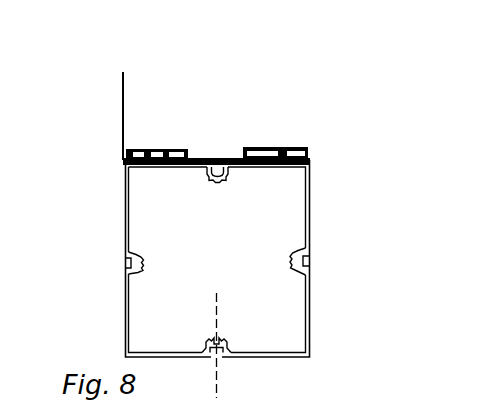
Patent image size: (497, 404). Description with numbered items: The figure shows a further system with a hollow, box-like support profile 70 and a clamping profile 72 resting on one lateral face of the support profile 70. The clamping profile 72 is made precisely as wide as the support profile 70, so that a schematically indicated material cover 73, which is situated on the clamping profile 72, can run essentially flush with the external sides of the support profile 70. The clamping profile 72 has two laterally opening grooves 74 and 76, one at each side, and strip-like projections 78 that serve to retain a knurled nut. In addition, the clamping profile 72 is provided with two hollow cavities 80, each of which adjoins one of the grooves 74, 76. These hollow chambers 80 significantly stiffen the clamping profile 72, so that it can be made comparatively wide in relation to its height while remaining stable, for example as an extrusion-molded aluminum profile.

The support profile 70 is at (308, 212).
The clamping profile 72 is at (278, 143).
The material cover 73 is at (125, 89).
The groove 74 is at (309, 149).
The groove 76 is at (122, 159).
The strip-like projections 78 is at (197, 157).
The hollow cavities 80 is at (166, 152).